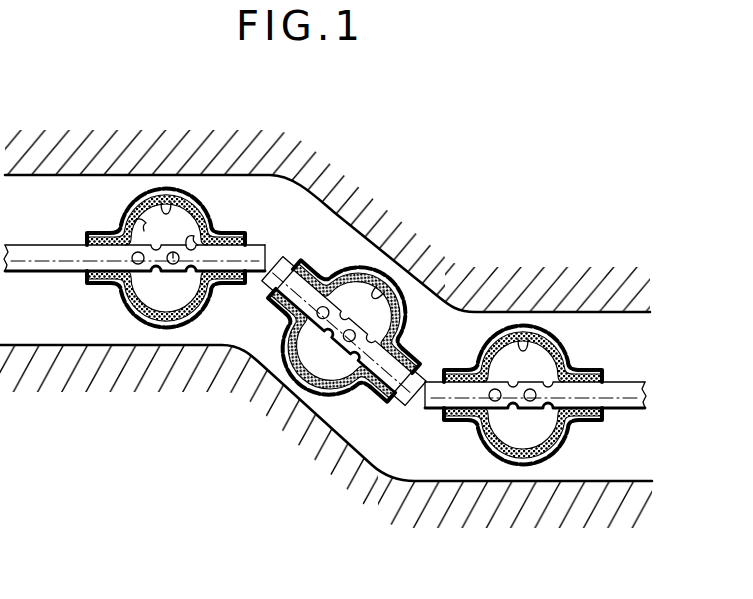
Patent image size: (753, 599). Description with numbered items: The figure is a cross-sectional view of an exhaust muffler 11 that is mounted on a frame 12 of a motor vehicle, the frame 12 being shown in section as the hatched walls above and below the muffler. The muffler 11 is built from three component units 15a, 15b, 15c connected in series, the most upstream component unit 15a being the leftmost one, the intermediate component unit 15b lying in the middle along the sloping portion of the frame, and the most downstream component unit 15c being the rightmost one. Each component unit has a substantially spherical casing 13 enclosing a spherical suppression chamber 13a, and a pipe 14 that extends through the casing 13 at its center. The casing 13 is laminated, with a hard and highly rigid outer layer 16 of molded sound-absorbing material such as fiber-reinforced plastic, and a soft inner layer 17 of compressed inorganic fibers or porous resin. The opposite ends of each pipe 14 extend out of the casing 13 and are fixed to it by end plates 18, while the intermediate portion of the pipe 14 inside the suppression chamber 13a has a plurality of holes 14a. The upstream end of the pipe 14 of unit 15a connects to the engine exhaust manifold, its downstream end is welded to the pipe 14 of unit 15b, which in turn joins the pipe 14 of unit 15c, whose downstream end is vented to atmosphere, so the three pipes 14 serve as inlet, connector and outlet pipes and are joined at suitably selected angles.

The exhaust muffler 11 is at (326, 304).
The frame 12 is at (480, 217).
The casing 13 is at (338, 361).
The suppression chamber 13a is at (142, 222).
The pipe 14 is at (341, 302).
The holes 14a is at (190, 240).
The most upstream component unit 15a is at (112, 305).
The intermediate component unit 15b is at (346, 334).
The most downstream component unit 15c is at (620, 430).
The outer layer 16 is at (187, 326).
The inner layer 17 is at (199, 300).
The end plates 18 is at (243, 237).